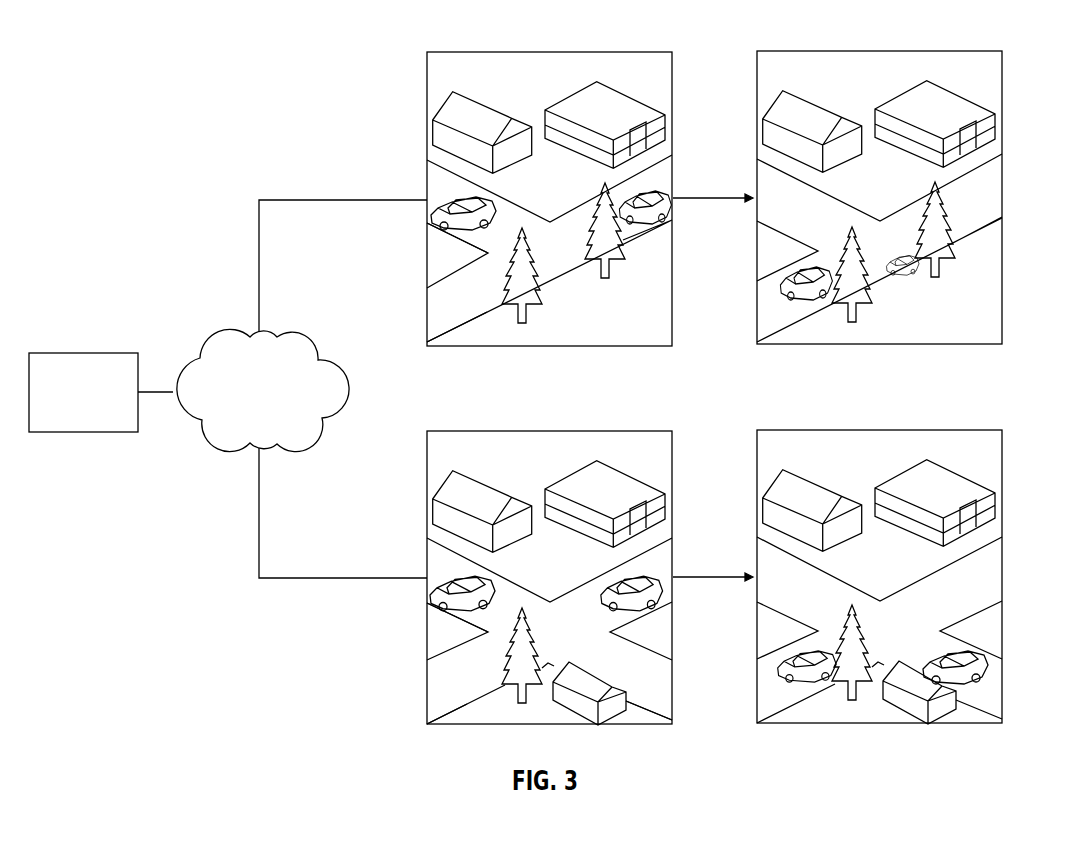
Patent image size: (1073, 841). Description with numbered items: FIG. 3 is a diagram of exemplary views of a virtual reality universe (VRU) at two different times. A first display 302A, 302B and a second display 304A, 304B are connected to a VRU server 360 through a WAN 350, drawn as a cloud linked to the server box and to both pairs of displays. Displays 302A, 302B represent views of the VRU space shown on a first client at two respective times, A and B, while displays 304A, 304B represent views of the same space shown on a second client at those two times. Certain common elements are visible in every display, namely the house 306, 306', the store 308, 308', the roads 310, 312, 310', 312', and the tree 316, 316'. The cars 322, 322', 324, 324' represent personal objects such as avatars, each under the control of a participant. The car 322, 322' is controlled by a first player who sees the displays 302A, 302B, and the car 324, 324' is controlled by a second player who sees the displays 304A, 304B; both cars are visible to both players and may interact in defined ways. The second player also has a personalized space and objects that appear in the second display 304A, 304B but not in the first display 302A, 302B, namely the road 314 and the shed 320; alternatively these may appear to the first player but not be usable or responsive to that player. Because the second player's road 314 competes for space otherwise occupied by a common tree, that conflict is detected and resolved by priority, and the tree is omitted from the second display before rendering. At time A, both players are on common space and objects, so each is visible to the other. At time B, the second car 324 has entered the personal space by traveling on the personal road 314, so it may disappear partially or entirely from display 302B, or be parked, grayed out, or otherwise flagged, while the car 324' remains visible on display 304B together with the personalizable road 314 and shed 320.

The first display at time A 302A is at (536, 48).
The first display at time B 302B is at (876, 44).
The second display at time A 304A is at (538, 731).
The second display at time B 304B is at (868, 729).
The house 306 is at (616, 126).
The house 306' is at (449, 507).
The store 308 is at (770, 93).
The store 308' is at (613, 472).
The road 310 is at (433, 196).
The road 310' is at (432, 576).
The road 312 is at (428, 322).
The road 312' is at (420, 692).
The road 314 is at (660, 688).
The tree 316 is at (561, 280).
The tree 316' is at (468, 683).
The shed 320 is at (610, 713).
The car 322 is at (725, 245).
The car 322' is at (718, 613).
The car 324 is at (711, 264).
The car 324' is at (713, 643).
The WAN 350 is at (215, 337).
The VRU server 360 is at (102, 402).